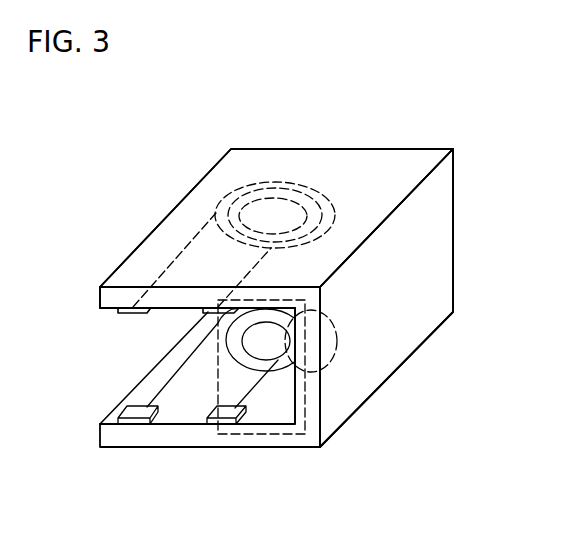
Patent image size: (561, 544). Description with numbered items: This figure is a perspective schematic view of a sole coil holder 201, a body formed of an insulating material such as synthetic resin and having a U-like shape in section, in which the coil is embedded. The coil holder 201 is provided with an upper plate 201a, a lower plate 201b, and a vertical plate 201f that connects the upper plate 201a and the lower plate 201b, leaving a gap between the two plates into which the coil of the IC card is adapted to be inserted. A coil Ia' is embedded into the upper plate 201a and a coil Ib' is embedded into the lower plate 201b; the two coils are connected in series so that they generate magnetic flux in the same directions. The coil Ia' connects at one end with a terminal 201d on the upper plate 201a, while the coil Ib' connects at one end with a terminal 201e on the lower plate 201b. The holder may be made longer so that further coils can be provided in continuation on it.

The coil holder 201 is at (461, 244).
The upper plate 201a is at (402, 162).
The lower plate 201b is at (193, 407).
The terminal 201d is at (130, 312).
The terminal 201e is at (138, 417).
The vertical plate 201f is at (398, 323).
The coil Ia' is at (234, 188).
The coil Ib' is at (327, 381).